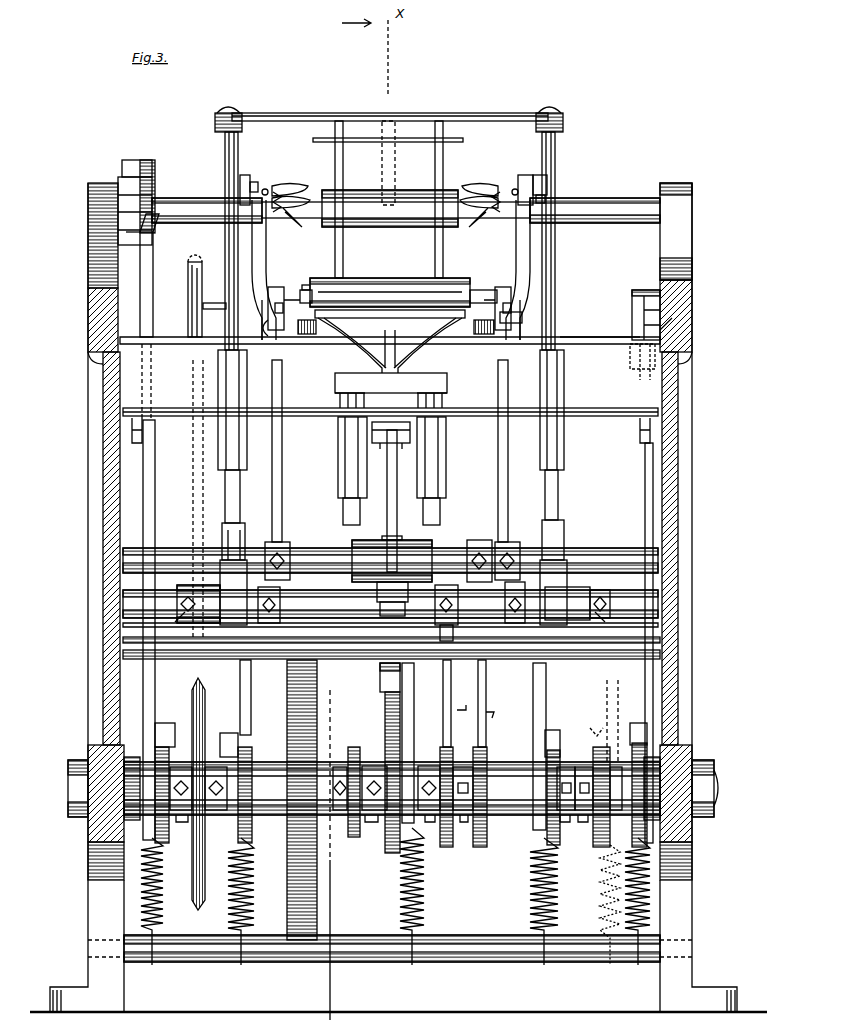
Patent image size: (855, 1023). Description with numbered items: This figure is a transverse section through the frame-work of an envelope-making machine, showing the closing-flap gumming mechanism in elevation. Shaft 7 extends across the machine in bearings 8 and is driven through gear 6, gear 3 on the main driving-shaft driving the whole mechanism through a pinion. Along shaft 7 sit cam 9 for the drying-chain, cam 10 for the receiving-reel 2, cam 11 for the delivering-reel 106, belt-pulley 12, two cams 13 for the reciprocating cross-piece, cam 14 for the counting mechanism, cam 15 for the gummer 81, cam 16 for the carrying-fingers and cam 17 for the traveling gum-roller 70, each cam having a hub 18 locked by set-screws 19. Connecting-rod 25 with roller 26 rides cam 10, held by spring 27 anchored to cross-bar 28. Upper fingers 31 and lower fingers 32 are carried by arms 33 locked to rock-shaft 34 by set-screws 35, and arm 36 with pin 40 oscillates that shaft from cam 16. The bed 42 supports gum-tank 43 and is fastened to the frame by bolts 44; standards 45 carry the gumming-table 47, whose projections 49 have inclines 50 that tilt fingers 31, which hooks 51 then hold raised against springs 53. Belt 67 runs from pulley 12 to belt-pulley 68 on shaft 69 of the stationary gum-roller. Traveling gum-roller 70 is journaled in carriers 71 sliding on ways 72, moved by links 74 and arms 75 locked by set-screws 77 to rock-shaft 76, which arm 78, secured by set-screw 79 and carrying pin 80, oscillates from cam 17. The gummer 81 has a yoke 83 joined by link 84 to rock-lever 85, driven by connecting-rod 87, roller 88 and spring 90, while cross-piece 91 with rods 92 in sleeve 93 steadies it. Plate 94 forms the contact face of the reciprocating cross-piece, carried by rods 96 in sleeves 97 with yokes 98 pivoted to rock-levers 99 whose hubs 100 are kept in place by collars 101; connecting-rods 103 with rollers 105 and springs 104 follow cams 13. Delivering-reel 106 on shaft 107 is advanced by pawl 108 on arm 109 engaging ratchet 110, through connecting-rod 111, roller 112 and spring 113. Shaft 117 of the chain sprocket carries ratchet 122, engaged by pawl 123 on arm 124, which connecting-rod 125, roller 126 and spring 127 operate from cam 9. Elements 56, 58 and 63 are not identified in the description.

The receiving-reel 2 is at (102, 603).
The gear 3 is at (74, 817).
The gear 6 is at (312, 700).
The shaft 7 is at (330, 762).
The bearings 8 is at (708, 817).
The cam 9 is at (636, 822).
The cam 10 is at (594, 843).
The cam 11 is at (165, 841).
The belt-pulley 12 is at (204, 905).
The cams 13 is at (238, 843).
The cam 14 is at (354, 837).
The cam 15 is at (388, 725).
The cam 16 is at (447, 847).
The cam 17 is at (485, 845).
The hubs 18 is at (427, 766).
The set-screws 19 is at (462, 780).
The connecting-rod 25 is at (607, 702).
The roller 26 is at (596, 730).
The spring 27 is at (600, 906).
The cross-bar 28 is at (488, 940).
The upper carrying-fingers 31 is at (296, 186).
The lower carrying-fingers 32 is at (298, 228).
The arms 33 is at (262, 246).
The rock-shaft 34 is at (340, 618).
The set-screws 35 is at (278, 614).
The arm 36 is at (443, 700).
The pin 40 is at (460, 708).
The bed 42 is at (173, 425).
The gum-tank 43 is at (396, 328).
The bolts 44 is at (145, 440).
The standards 45 is at (250, 238).
The gumming-table 47 is at (378, 218).
The projections 49 is at (249, 177).
The inclines 50 is at (264, 186).
The hooks 51 is at (548, 192).
The springs 53 is at (280, 206).
The post 56 is at (392, 173).
The top bar 58 is at (428, 121).
The stub shaft 63 is at (308, 288).
The belt 67 is at (193, 500).
The belt-pulley 68 is at (188, 288).
The shaft 69 is at (214, 305).
The traveling gum-roller 70 is at (410, 282).
The carriers 71 is at (277, 288).
The ways 72 is at (284, 311).
The links 74 is at (280, 334).
The arms 75 is at (282, 437).
The rock-shaft 76 is at (313, 548).
The set-screws 77 is at (285, 548).
The arm 78 is at (486, 676).
The set-screw 79 is at (474, 556).
The pin 80 is at (498, 721).
The gummer 81 is at (366, 318).
The yoke 83 is at (389, 441).
The link 84 is at (387, 512).
The rock-lever 85 is at (380, 610).
The connecting-rod 87 is at (414, 708).
The roller 88 is at (380, 673).
The spring 90 is at (424, 882).
The cross-piece 91 is at (418, 376).
The rods 92 is at (343, 506).
The sleeve 93 is at (338, 466).
The plate 94 is at (360, 142).
The rods 96 is at (225, 162).
The sleeves 97 is at (220, 373).
The yokes 98 is at (222, 540).
The rock-levers 99 is at (233, 592).
The hubs 100 is at (390, 628).
The collars 101 is at (397, 624).
The connecting-rods 103 is at (251, 690).
The springs 104 is at (254, 852).
The rollers 105 is at (228, 733).
The delivering-reel 106 is at (352, 190).
The shaft 107 is at (607, 206).
The pawl 108 is at (131, 160).
The arm 109 is at (150, 176).
The ratchet 110 is at (132, 234).
The connecting-rod 111 is at (153, 311).
The roller 112 is at (155, 700).
The spring 113 is at (163, 885).
The shaft 117 is at (597, 340).
The ratchet 122 is at (662, 330).
The pawl 123 is at (645, 290).
The arm 124 is at (630, 340).
The connecting-rod 125 is at (645, 491).
The roller 126 is at (634, 723).
The spring 127 is at (652, 905).